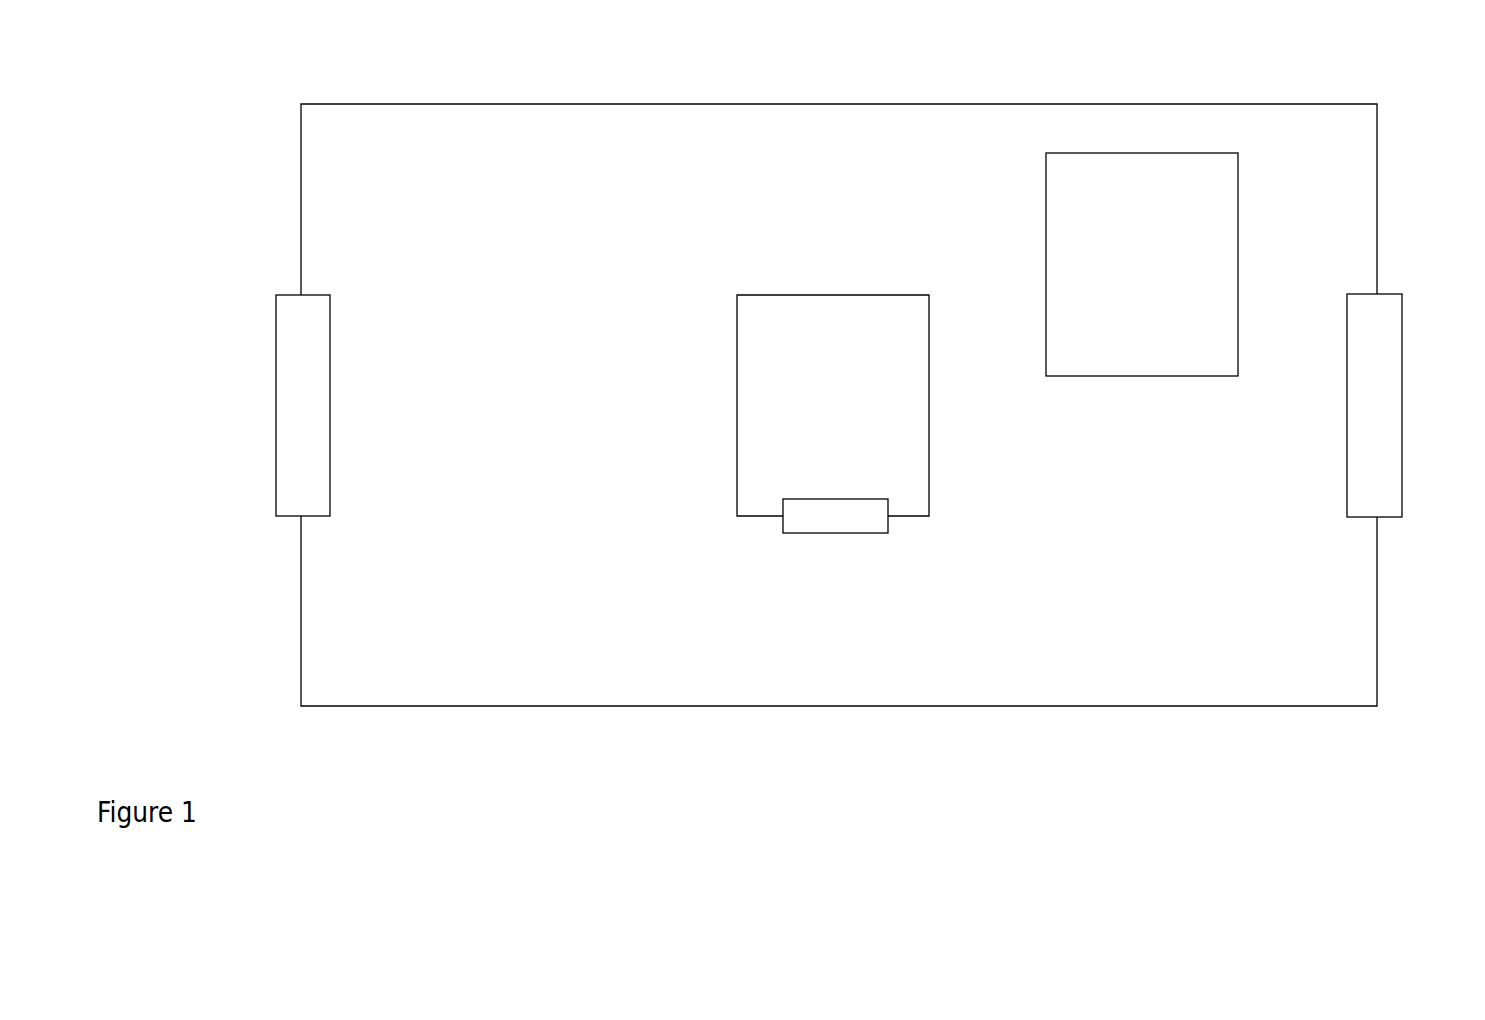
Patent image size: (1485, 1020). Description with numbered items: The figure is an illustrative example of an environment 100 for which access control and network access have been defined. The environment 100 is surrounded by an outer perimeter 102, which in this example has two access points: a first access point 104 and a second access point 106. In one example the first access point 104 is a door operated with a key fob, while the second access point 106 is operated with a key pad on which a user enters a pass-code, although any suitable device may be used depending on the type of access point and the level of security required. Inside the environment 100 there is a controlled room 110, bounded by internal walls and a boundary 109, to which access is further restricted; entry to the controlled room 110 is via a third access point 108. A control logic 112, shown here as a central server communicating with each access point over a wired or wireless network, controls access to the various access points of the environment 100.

The environment 100 is at (205, 105).
The outer perimeter 102 is at (622, 99).
The first access point 104 is at (292, 406).
The second access point 106 is at (1386, 406).
The third access point 108 is at (873, 545).
The boundary of unit 109 is at (732, 372).
The controlled room 110 is at (795, 405).
The control logic 112 is at (1142, 264).